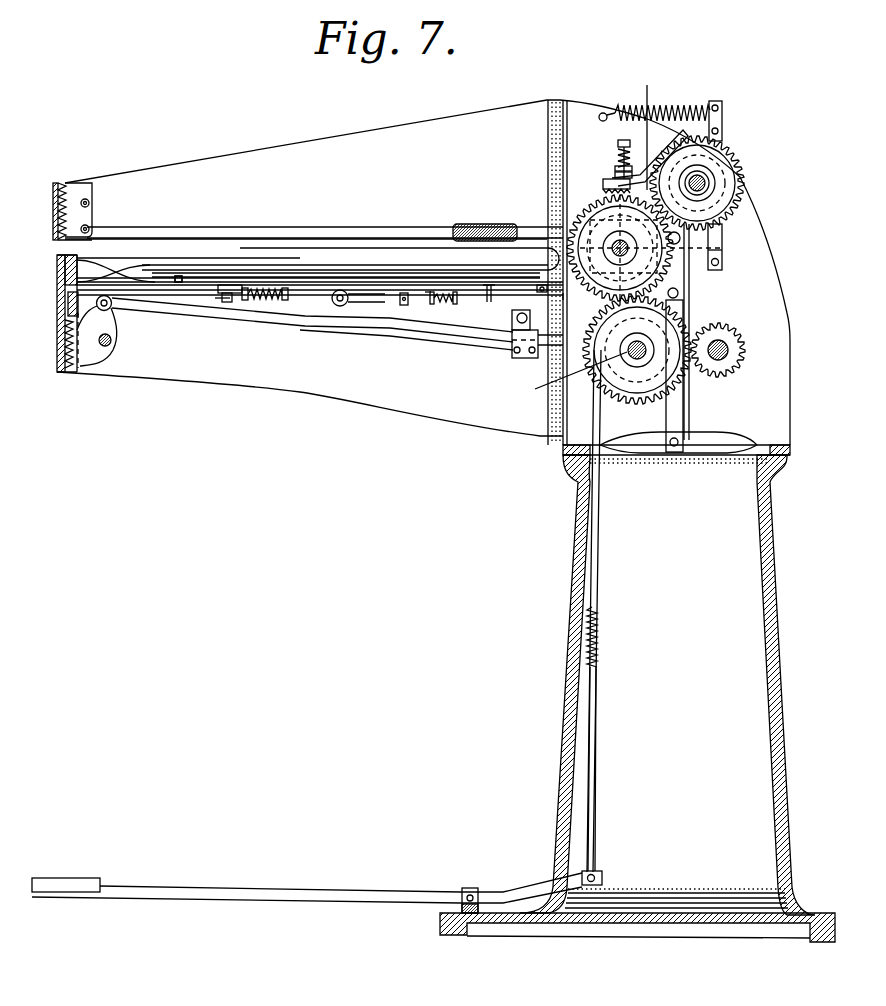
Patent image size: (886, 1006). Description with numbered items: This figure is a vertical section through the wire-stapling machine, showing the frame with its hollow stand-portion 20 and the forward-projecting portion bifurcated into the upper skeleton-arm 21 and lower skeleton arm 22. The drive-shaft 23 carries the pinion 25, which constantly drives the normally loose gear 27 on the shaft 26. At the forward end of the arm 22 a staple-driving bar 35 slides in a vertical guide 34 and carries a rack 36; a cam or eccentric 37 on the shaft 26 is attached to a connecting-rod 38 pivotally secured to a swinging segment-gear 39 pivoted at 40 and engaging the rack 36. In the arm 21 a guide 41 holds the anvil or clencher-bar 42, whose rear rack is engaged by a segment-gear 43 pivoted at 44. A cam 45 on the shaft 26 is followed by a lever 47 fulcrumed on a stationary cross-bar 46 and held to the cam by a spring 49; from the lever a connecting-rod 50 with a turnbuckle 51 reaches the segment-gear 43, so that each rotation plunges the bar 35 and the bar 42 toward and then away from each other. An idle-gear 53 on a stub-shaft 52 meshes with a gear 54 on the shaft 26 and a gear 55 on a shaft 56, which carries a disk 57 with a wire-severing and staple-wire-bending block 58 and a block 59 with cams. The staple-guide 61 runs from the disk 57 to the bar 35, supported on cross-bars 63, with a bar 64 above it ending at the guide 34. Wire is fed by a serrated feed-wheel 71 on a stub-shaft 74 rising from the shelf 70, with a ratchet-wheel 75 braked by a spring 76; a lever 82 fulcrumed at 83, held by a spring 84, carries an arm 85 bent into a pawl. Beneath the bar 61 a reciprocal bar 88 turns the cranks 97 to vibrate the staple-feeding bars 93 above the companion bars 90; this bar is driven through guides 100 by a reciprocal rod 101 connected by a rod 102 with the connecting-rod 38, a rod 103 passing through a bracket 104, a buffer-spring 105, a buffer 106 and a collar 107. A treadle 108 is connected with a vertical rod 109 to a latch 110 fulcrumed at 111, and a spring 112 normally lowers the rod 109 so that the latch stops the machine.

The hollow stand-portion 20 is at (637, 698).
The upper skeleton-arm 21 is at (427, 281).
The lower skeleton arm 22 is at (310, 345).
The drive-shaft 23 is at (728, 350).
The pinion 25 is at (675, 272).
The shaft 26 is at (597, 350).
The gear 27 is at (683, 373).
The vertical guide 34 is at (62, 278).
The staple-driving bar 35 is at (62, 298).
The rack 36 is at (67, 336).
The cam or eccentric 37 is at (596, 372).
The connecting-rod 38 is at (410, 330).
The swinging segment-gear 39 is at (88, 347).
The pivot 40 is at (109, 344).
The guide 41 is at (54, 210).
The anvil or clencher-bar 42 is at (62, 184).
The segment-gear 43 is at (77, 195).
The pivot 44 is at (91, 203).
The cam 45 is at (651, 400).
The stationary cross-bar 46 is at (704, 446).
The lever 47 is at (690, 306).
The spring 49 is at (679, 293).
The connecting-rod 50 is at (357, 229).
The turnbuckle 51 is at (485, 226).
The stub-shaft 52 is at (723, 250).
The idle-gear 53 is at (580, 213).
The gear 54 is at (623, 400).
The gear 55 is at (738, 160).
The shaft 56 is at (704, 183).
The disk 57 is at (742, 207).
The wire-severing and staple-wire-bending block 58 is at (649, 124).
The block 59 is at (680, 126).
The staple-guide 61 is at (138, 276).
The cross-bars 63 is at (185, 282).
The bar 64 is at (123, 260).
The shelf or bracket 70 is at (598, 190).
The staple-wire feed-wheel 71 is at (603, 183).
The stub-shaft 74 is at (620, 144).
The ratchet-wheel 75 is at (616, 170).
The spring 76 is at (618, 152).
The lever 82 is at (722, 230).
The fulcrum 83 is at (722, 267).
The spring 84 is at (690, 110).
The arm 85 is at (722, 132).
The reciprocal bar 88 is at (215, 290).
The companion bars 90 is at (240, 278).
The staple-feeding bars 93 is at (279, 249).
The cranks 97 is at (177, 275).
The guides 100 is at (320, 322).
The reciprocal rod 101 is at (201, 340).
The rod 102 is at (406, 359).
The rod 103 is at (358, 336).
The bracket 104 is at (416, 345).
The buffer-spring 105 is at (460, 332).
The buffer 106 is at (265, 319).
The collar 107 is at (422, 361).
The treadle or foot-lever 108 is at (307, 884).
The vertical rod 109 is at (618, 776).
The lever or latch 110 is at (536, 346).
The fulcrum 111 is at (550, 309).
The spring 112 is at (619, 637).